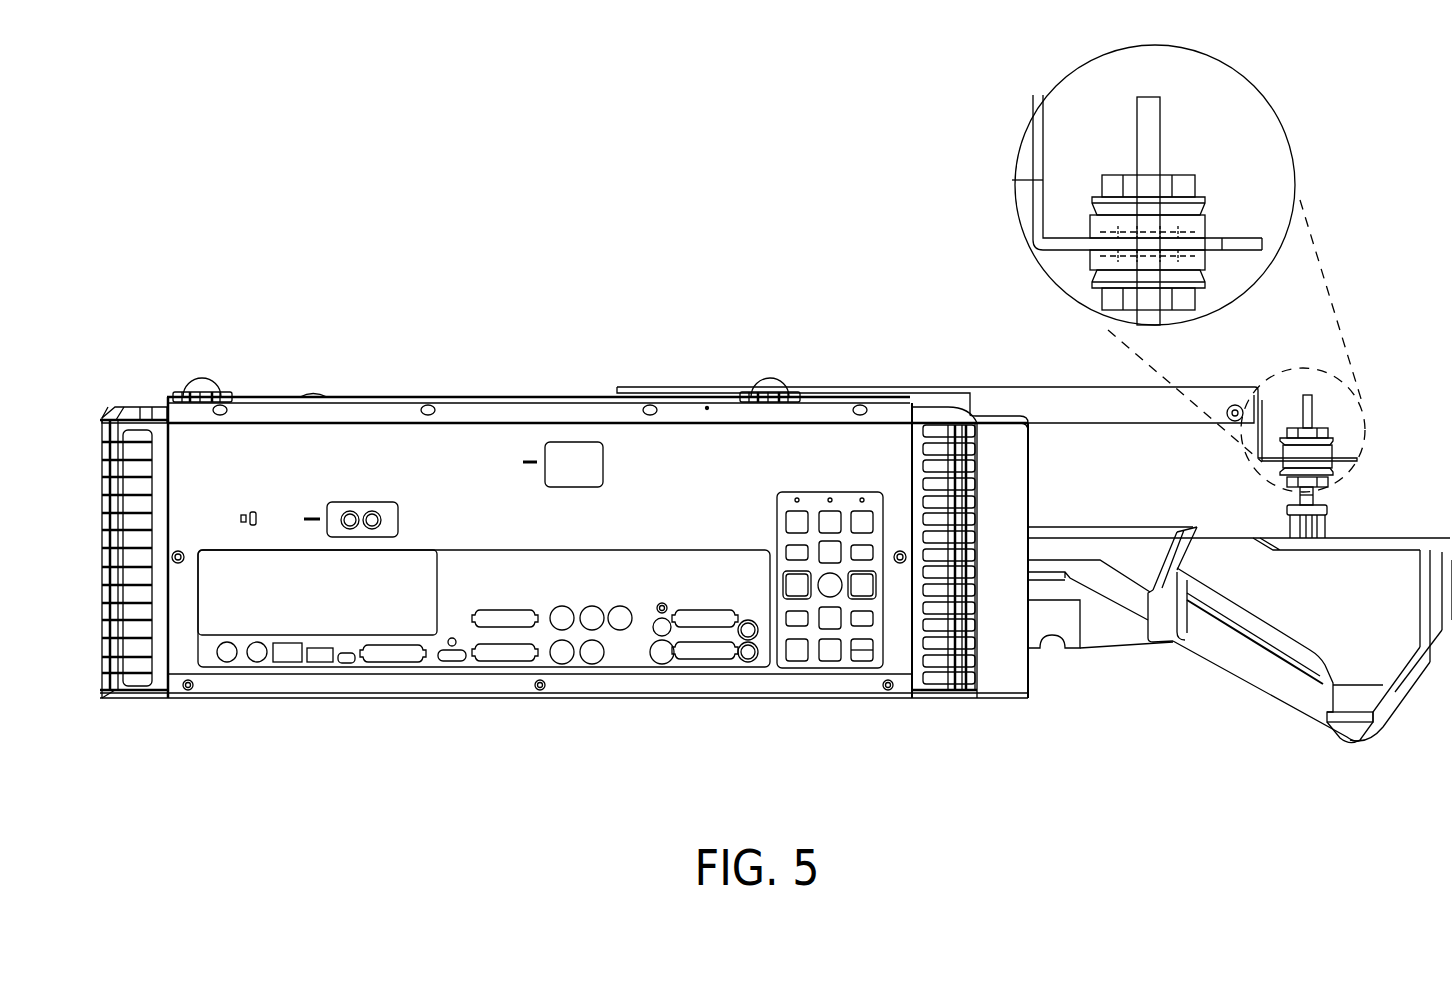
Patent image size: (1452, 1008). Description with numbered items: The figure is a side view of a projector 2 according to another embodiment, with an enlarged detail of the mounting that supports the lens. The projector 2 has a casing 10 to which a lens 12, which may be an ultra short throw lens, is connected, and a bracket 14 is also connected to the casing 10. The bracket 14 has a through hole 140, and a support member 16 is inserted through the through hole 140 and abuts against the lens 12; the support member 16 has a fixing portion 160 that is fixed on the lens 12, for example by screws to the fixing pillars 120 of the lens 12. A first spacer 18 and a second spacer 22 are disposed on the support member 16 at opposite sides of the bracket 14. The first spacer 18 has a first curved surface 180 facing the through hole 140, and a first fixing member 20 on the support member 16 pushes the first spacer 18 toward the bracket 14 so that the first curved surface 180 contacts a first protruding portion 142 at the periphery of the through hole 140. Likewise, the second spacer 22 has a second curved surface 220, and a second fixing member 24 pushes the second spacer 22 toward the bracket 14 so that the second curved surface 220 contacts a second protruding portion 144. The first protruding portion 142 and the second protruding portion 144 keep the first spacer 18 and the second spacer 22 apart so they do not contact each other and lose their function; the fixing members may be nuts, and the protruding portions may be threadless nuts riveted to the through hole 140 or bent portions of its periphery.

The projector 2 is at (333, 132).
The casing 10 is at (387, 393).
The lens 12 is at (1232, 672).
The bracket 14 is at (900, 387).
The support member 16 is at (1150, 97).
The first spacer 18 is at (1203, 195).
The first fixing member 20 is at (1185, 173).
The second spacer 22 is at (1203, 283).
The second fixing member 24 is at (1200, 300).
The fixing pillars 120 is at (1328, 532).
The through hole 140 is at (1092, 243).
The first protruding portion 142 is at (1205, 232).
The second protruding portion 144 is at (1207, 256).
The fixing portion 160 is at (1325, 513).
The first curved surface 180 is at (1205, 215).
The second curved surface 220 is at (1207, 266).